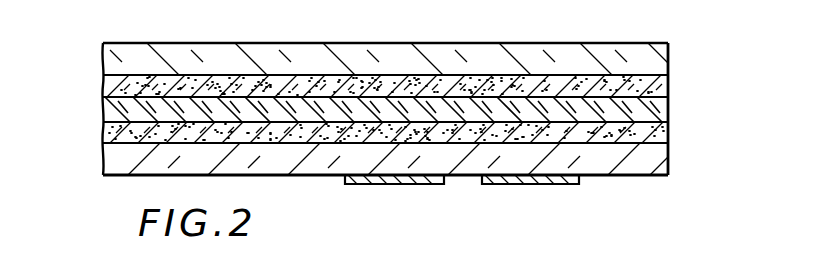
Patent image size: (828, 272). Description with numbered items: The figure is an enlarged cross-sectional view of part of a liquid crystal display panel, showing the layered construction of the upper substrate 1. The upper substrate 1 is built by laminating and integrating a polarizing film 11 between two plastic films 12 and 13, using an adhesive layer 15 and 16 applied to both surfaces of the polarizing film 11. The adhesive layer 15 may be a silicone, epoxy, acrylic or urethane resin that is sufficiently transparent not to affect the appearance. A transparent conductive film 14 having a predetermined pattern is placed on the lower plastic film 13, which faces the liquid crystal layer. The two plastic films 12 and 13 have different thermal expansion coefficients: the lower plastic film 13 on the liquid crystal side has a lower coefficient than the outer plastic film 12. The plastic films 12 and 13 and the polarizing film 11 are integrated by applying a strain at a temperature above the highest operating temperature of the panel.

The upper substrate 1 is at (723, 30).
The polarizing film 11 is at (668, 108).
The plastic film 12 is at (668, 57).
The plastic film 13 is at (665, 158).
The transparent conductive film 14 is at (390, 186).
The adhesive layer 15 is at (106, 85).
The adhesive layer 16 is at (103, 130).